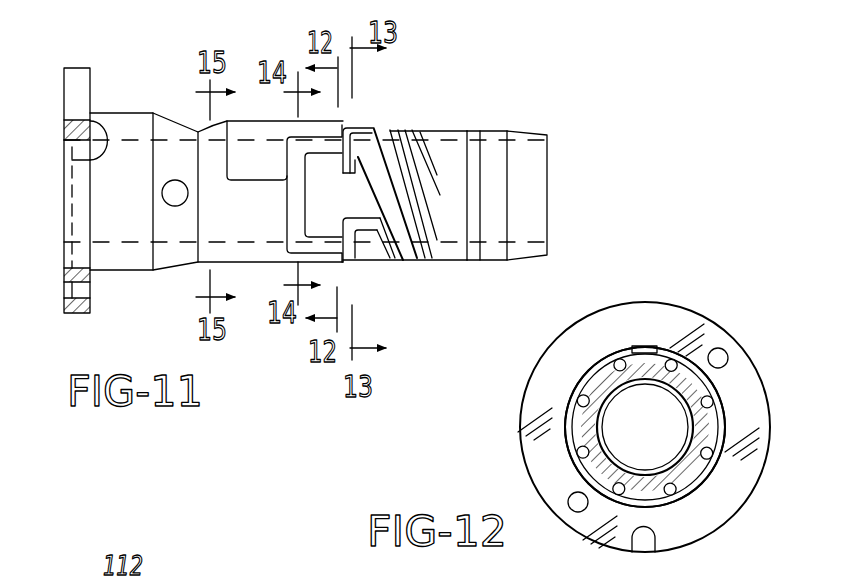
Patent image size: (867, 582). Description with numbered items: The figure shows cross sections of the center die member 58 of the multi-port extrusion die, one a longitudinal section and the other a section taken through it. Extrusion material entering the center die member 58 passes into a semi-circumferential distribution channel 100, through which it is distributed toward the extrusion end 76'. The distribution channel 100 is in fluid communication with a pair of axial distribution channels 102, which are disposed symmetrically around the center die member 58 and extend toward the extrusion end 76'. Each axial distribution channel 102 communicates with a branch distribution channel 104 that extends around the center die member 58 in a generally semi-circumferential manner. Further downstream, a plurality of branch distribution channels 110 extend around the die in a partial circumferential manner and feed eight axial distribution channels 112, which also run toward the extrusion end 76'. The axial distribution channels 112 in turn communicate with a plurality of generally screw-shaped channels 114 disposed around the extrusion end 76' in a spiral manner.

In FIG. 11, the center die member 58 is at (561, 52).
In FIG. 11, the extrusion end 76' is at (507, 173).
In FIG. 11, the semi-circumferential distribution channel 100 is at (167, 113).
In FIG. 12, the semi-circumferential distribution channel 100 is at (657, 347).
In FIG. 11, the axial distribution channels 102 is at (222, 206).
In FIG. 11, the branch distribution channel 104 is at (300, 170).
In FIG. 11, the branch distribution channels 110 is at (393, 123).
In FIG. 11, the axial distribution channels 112 is at (362, 122).
In FIG. 12, the axial distribution channels 112 is at (717, 450).
In FIG. 11, the screw-shaped channels 114 is at (397, 182).